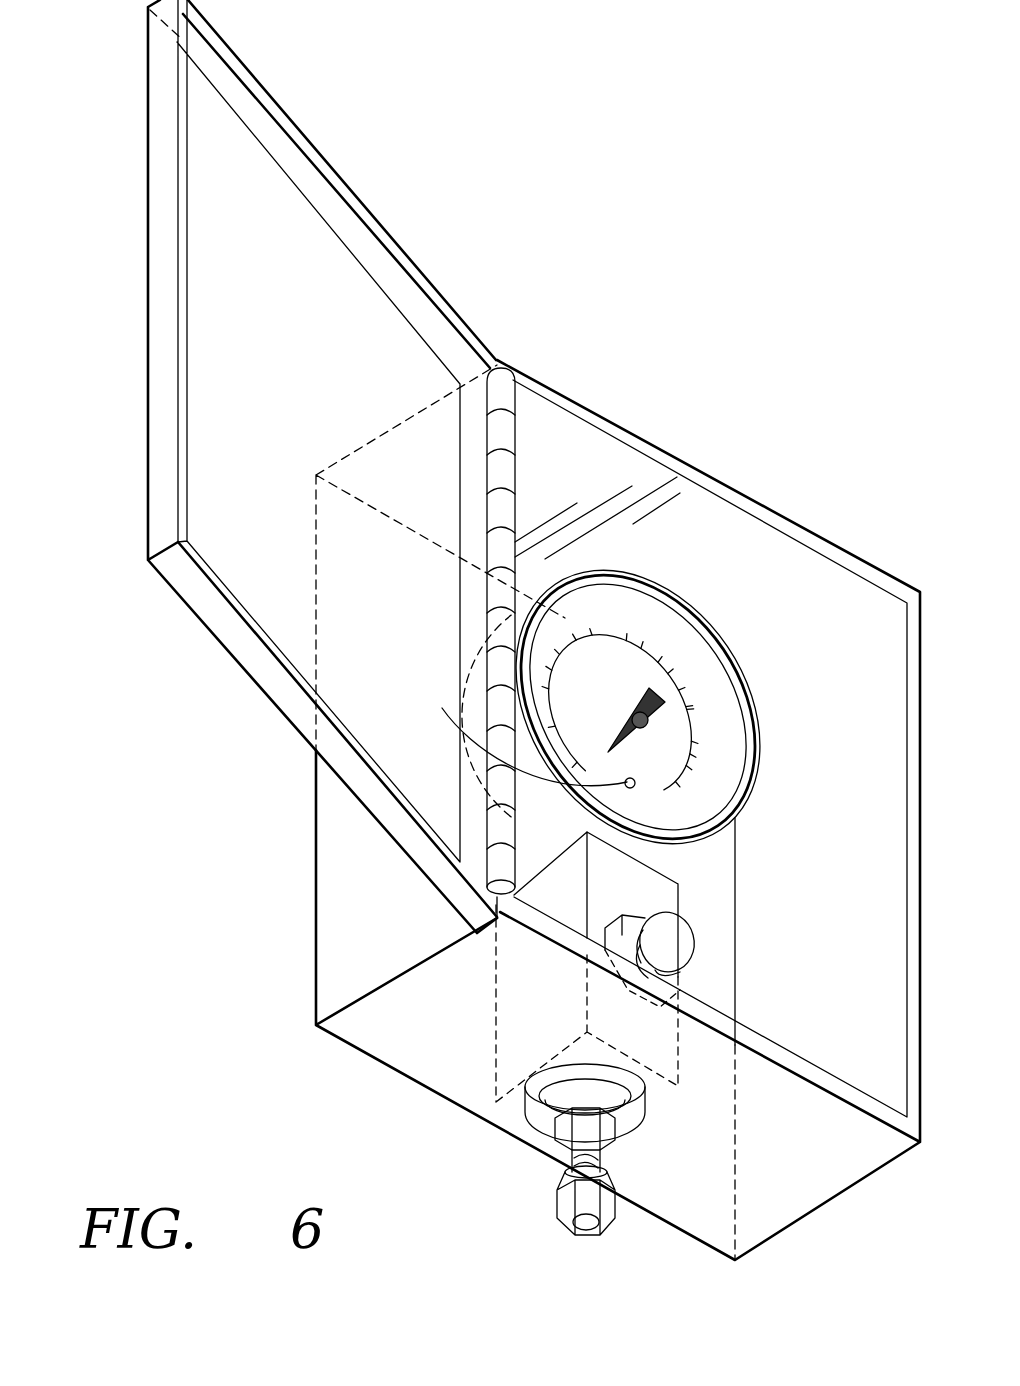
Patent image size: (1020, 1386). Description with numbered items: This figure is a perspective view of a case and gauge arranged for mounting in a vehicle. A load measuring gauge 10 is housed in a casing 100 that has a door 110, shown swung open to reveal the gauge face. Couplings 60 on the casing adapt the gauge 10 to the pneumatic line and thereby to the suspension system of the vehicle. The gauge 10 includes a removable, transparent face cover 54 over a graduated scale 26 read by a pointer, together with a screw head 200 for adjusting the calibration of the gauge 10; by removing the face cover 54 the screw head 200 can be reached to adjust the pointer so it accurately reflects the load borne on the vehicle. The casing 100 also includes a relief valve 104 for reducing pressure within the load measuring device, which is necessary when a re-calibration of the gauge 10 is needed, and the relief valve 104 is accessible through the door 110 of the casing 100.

The load measuring gauge 10 is at (673, 707).
The graduated scale 26 is at (645, 628).
The transparent face cover 54 is at (752, 791).
The couplings 60 is at (520, 1191).
The casing 100 is at (770, 503).
The relief valve 104 is at (695, 952).
The door 110 is at (165, 495).
The screw head 200 is at (462, 716).